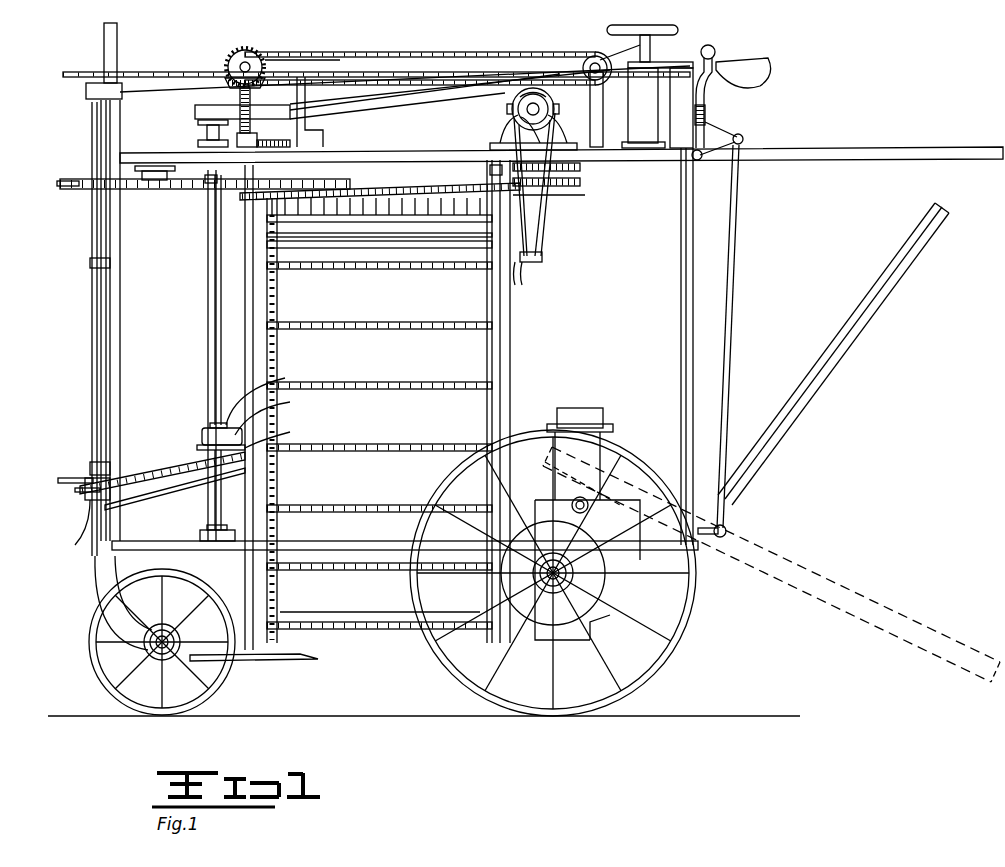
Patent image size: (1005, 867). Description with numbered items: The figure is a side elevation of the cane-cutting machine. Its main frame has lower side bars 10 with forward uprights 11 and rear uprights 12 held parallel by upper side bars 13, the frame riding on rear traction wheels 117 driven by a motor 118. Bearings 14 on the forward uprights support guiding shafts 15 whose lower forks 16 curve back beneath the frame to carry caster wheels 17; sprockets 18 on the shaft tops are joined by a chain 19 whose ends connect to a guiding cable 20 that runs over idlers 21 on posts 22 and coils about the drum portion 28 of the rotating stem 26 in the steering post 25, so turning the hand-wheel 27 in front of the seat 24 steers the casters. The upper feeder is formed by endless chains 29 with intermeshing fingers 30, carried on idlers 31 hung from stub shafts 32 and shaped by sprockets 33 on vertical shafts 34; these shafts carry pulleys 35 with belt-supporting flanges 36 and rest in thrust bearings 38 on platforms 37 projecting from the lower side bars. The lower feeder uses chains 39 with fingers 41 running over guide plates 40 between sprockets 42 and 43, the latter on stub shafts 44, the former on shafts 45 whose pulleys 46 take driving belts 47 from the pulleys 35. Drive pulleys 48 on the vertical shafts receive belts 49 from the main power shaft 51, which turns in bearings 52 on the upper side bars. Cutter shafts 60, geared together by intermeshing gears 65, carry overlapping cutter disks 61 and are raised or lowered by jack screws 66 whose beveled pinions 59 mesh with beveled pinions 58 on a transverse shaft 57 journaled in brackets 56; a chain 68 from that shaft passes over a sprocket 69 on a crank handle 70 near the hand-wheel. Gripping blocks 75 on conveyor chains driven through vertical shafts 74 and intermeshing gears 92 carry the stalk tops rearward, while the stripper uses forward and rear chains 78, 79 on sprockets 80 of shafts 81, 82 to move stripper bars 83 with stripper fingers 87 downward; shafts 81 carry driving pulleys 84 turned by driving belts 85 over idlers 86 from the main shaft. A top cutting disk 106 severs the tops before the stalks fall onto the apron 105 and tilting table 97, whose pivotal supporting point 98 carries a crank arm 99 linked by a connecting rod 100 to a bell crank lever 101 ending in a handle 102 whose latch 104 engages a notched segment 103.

The lower side bars 10 is at (345, 548).
The forward uprights 11 is at (121, 418).
The rear uprights 12 is at (681, 325).
The upper side bars 13 is at (414, 163).
The bearings 14 is at (90, 264).
The guiding shafts 15 is at (92, 345).
The forks 16 is at (100, 580).
The caster wheels 17 is at (92, 632).
The sprockets 18 is at (88, 72).
The chain 19 is at (172, 72).
The guiding cable 20 is at (492, 70).
The idlers 21 is at (690, 68).
The posts 22 is at (706, 104).
The seat 24 is at (770, 68).
The steering post 25 is at (657, 105).
The rotating stem 26 is at (620, 50).
The hand-wheel 27 is at (660, 27).
The drum portion 28 is at (651, 60).
The endless chains 29 is at (175, 190).
The fingers 30 is at (65, 189).
The idlers 31 is at (145, 166).
The stub shafts 32 is at (160, 170).
The sprockets 33 is at (208, 184).
The vertical shafts 34 is at (208, 258).
The pulleys 35 is at (212, 424).
The belt-supporting flanges 36 is at (203, 440).
The platforms 37 is at (200, 538).
The bearings 38 is at (214, 526).
The endless belts or chains 39 is at (175, 482).
The guide plates 40 is at (85, 495).
The fingers 41 is at (58, 480).
The sprockets 42 is at (200, 458).
The sprockets 43 is at (75, 490).
The stub shafts 44 is at (85, 520).
The shafts 45 is at (277, 433).
The pulleys 46 is at (275, 415).
The driving belts 47 is at (287, 376).
The drive pulleys 48 is at (200, 106).
The belts 49 is at (420, 120).
The main power shaft 51 is at (512, 109).
The bearings 52 is at (500, 140).
The brackets 56 is at (307, 133).
The transverse shaft 57 is at (236, 55).
The beveled pinions 58 is at (250, 78).
The beveled pinions 59 is at (262, 80).
The cutter shafts 60 is at (245, 313).
The cutter disks 61 is at (272, 662).
The intermeshing gears 65 is at (288, 126).
The jack screws 66 is at (207, 126).
The chain 68 is at (408, 52).
The sprocket 69 is at (585, 60).
The crank handle 70 is at (609, 109).
The vertical shafts 74 is at (582, 169).
The gripping blocks 75 is at (362, 190).
The forward chains 78 is at (280, 297).
The rear chains 79 is at (487, 300).
The sprockets 80 is at (280, 235).
The shafts 81 is at (405, 242).
The shafts 82 is at (370, 622).
The stripper bars 83 is at (382, 452).
The driving pulleys 84 is at (540, 238).
The driving belts 85 is at (542, 258).
The idlers 86 is at (525, 277).
The stripper fingers 87 is at (549, 98).
The intermeshing gears 92 is at (490, 170).
The tilting table 97 is at (865, 300).
The pivotal supporting point 98 is at (700, 548).
The crank arm 99 is at (726, 527).
The connecting rod 100 is at (727, 362).
The bell crank lever 101 is at (744, 135).
The handle 102 is at (715, 52).
The notched segment 103 is at (708, 160).
The latch 104 is at (740, 118).
The apron 105 is at (545, 650).
The top cutting disk 106 is at (560, 198).
The traction wheels 117 is at (690, 630).
The motor 118 is at (590, 456).